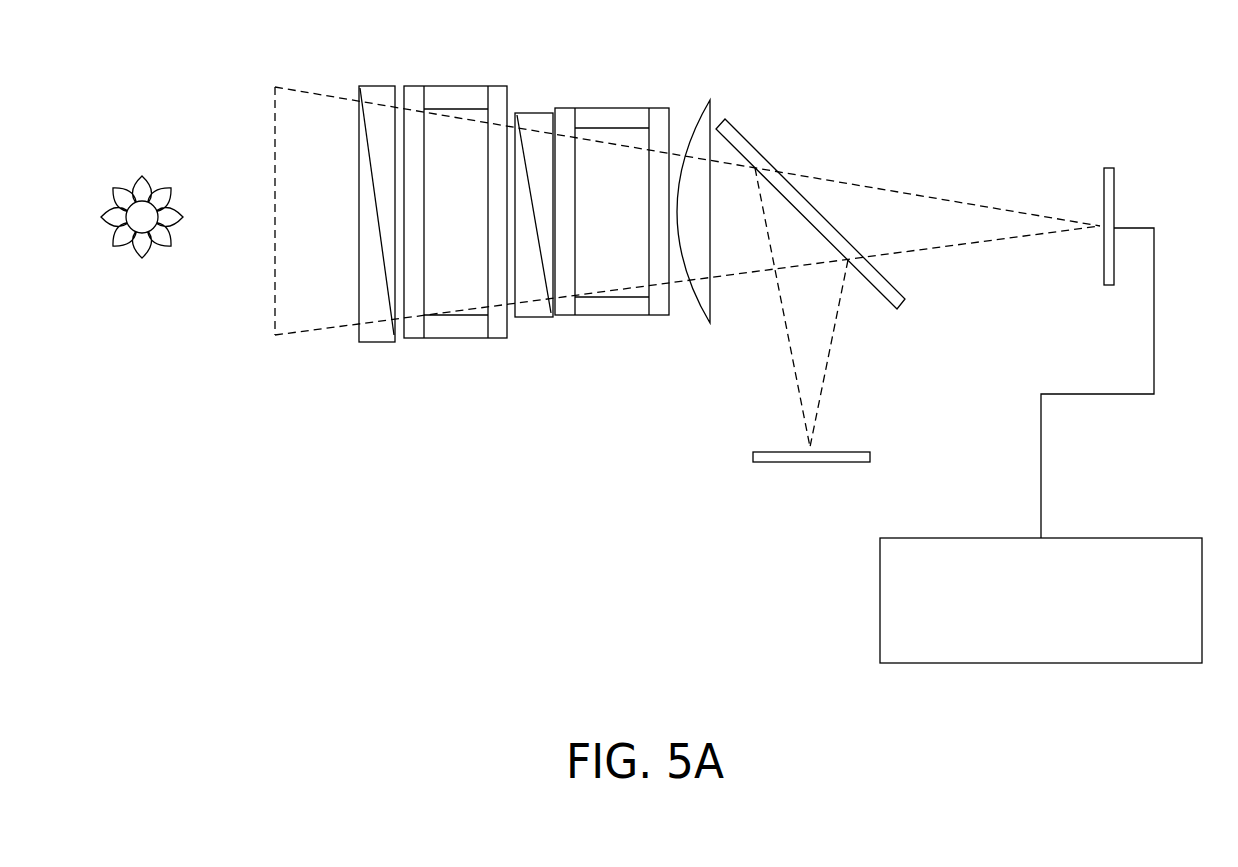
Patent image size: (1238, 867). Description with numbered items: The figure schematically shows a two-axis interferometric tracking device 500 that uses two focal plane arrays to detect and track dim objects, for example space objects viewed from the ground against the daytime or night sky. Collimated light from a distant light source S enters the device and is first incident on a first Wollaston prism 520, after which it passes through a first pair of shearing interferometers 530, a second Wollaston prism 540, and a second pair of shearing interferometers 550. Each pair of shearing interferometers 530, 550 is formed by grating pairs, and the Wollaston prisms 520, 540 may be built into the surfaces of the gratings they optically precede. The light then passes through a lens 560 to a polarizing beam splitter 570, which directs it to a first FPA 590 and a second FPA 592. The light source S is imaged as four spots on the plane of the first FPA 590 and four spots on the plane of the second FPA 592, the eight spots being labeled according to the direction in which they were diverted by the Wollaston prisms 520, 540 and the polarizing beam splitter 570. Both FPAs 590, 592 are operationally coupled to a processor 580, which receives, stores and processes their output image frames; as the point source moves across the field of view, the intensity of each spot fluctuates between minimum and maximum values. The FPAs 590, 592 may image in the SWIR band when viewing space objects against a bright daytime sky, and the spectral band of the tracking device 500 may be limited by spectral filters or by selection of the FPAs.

The two-axis interferometric tracking device 500 is at (470, 495).
The first Wollaston prism 520 is at (343, 343).
The first pair of shearing interferometers 530 is at (510, 345).
The second Wollaston prism 540 is at (515, 322).
The second pair of shearing interferometers 550 is at (669, 100).
The lens 560 is at (698, 135).
The polarizing beam splitter 570 is at (753, 145).
The processor 580 is at (1041, 445).
The first FPA 590 is at (870, 457).
The second FPA 592 is at (1110, 168).
The distant light source S is at (142, 233).